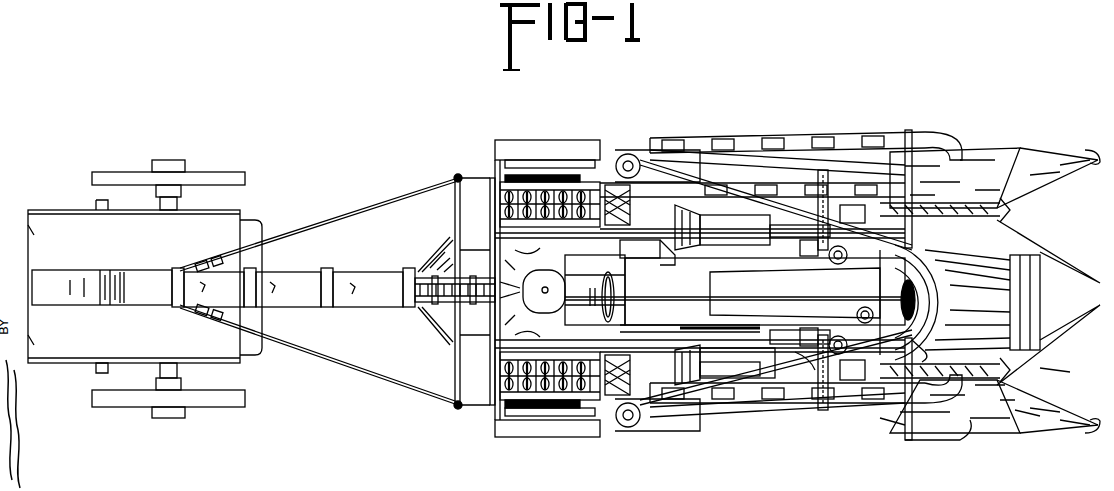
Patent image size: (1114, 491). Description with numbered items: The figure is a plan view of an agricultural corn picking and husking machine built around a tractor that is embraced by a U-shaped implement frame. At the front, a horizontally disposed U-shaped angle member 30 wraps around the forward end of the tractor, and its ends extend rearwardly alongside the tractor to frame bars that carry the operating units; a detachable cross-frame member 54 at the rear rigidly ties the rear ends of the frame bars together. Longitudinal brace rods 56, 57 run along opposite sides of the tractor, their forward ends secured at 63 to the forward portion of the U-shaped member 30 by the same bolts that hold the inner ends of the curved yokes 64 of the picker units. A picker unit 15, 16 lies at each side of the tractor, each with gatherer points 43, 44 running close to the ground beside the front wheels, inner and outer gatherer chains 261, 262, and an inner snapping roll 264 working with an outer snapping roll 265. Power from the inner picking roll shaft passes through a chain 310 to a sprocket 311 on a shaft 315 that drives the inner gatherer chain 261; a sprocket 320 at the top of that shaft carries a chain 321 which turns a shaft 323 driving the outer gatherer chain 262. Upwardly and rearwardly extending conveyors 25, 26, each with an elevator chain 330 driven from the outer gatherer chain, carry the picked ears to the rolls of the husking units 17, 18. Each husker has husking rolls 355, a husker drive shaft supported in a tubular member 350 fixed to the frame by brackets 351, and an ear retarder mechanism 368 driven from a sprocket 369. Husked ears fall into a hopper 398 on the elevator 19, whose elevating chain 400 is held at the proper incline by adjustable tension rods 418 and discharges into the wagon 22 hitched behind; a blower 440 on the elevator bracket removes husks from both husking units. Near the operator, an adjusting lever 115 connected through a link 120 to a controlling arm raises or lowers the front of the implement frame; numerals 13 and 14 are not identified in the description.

The control lever 13 is at (650, 268).
The operator platform box 14 is at (585, 250).
The picker unit 15 is at (1018, 216).
The picker unit 16 is at (1018, 379).
The husking unit 17 is at (566, 175).
The husking unit 18 is at (566, 410).
The elevator 19 is at (370, 282).
The wagon 22 is at (62, 228).
The conveyor 25 is at (702, 417).
The conveyor 26 is at (688, 148).
The U-shaped angle member 30 is at (960, 290).
The gatherer point 43 is at (1080, 282).
The gatherer point 44 is at (1060, 166).
The cross-frame member 54 is at (500, 350).
The brace rod 56 is at (815, 235).
The brace rod 57 is at (740, 350).
The brace rod fastening 63 is at (918, 342).
The curved yoke 64 is at (905, 176).
The adjusting lever 115 is at (606, 312).
The link 120 is at (704, 326).
The inner gatherer chain 261 is at (1066, 370).
The outer gatherer chain 262 is at (1031, 415).
The inner snapping roll 264 is at (952, 203).
The outer snapping roll 265 is at (950, 202).
The chain 310 is at (860, 320).
The sprocket 311 is at (812, 328).
The shaft 315 is at (855, 362).
The sprocket 320 is at (798, 330).
The chain 321 is at (810, 355).
The shaft 323 is at (904, 428).
The elevator chain 330 is at (745, 138).
The tubular member 350 is at (745, 244).
The bracket 351 is at (748, 262).
The husking rolls 355 is at (635, 205).
The ear retarder mechanism 368 is at (510, 210).
The sprocket 369 is at (540, 160).
The hopper 398 is at (452, 348).
The elevating chain 400 is at (500, 290).
The tension rod 418 is at (322, 236).
The blower 440 is at (505, 282).